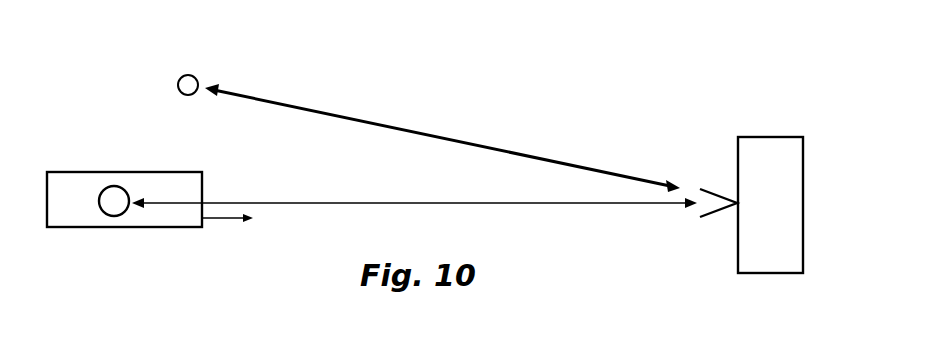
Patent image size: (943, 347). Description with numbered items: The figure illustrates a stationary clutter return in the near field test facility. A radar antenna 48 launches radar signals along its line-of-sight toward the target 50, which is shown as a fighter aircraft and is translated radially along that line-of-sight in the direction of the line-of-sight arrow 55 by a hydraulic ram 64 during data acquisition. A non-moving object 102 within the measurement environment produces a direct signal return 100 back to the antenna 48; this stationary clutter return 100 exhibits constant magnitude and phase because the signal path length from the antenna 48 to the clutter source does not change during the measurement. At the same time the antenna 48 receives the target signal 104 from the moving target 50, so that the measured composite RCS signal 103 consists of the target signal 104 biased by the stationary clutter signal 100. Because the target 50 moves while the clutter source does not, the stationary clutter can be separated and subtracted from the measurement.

The radar antenna 48 is at (707, 215).
The target 50 is at (117, 185).
The line-of-sight arrow 55 is at (218, 220).
The hydraulic ram 64 is at (112, 228).
The direct signal return 100 is at (620, 173).
The non-moving object 102 is at (180, 77).
The measured composite RCS signal 103 is at (642, 190).
The target signal 104 is at (593, 205).